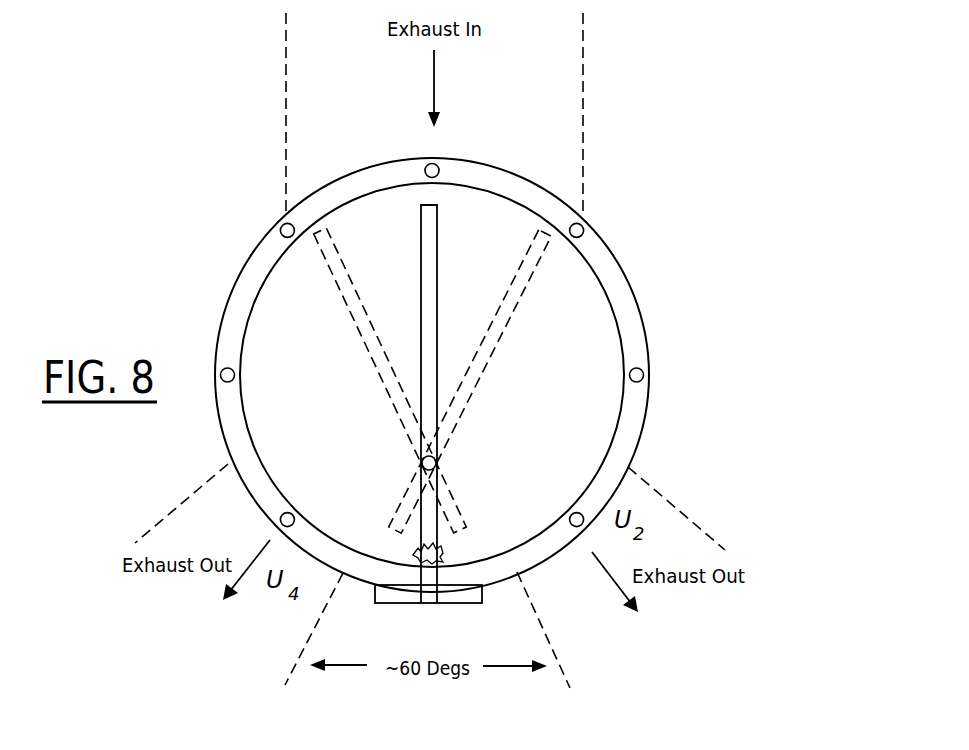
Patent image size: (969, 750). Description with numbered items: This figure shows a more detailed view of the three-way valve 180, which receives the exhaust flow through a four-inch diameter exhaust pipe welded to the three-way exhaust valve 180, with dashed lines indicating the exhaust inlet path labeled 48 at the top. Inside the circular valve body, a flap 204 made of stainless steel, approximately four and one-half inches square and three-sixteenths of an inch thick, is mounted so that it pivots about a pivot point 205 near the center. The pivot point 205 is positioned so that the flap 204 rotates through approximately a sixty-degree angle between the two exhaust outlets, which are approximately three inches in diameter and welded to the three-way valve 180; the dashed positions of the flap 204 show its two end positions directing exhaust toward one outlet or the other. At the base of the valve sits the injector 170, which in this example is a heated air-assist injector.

The exhaust duct 48 is at (583, 150).
The three-way valve 180 is at (684, 288).
The flap 204 is at (439, 251).
The pivot point 205 is at (445, 462).
The injector 170 is at (410, 598).